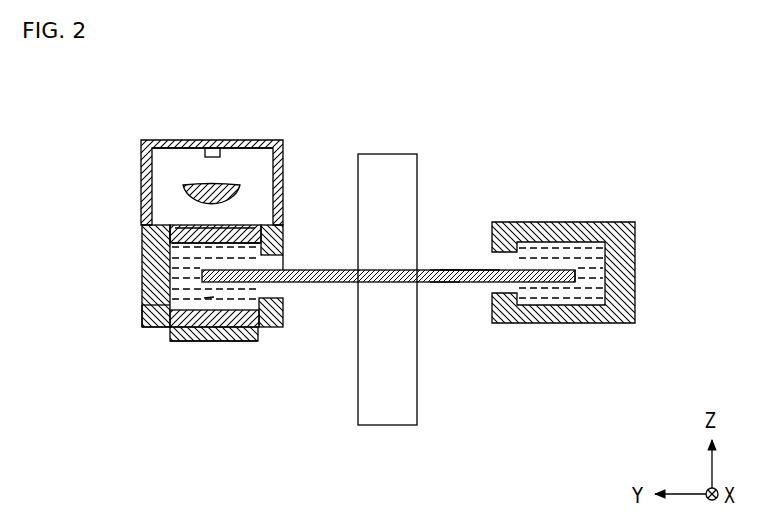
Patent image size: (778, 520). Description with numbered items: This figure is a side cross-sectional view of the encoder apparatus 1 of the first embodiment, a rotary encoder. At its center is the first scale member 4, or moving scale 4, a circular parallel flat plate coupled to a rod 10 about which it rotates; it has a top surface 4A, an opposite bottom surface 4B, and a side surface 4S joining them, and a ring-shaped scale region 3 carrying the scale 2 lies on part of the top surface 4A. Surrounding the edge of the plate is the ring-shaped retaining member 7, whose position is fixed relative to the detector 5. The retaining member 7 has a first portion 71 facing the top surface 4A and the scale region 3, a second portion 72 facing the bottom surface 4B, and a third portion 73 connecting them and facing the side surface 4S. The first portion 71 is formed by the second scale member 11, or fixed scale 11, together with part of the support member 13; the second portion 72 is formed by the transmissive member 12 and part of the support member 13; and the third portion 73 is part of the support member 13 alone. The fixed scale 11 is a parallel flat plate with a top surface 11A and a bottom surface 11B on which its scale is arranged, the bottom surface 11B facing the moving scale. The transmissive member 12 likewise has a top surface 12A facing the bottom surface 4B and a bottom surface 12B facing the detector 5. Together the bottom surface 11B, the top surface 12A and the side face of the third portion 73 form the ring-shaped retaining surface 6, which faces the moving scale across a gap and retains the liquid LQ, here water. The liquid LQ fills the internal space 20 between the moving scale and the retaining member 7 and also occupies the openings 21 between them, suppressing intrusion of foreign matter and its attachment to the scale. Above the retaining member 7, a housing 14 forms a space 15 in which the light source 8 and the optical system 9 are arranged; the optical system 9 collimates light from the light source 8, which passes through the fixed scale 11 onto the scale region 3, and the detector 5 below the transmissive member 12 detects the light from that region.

The encoder apparatus 1 is at (634, 142).
The scale 2 is at (238, 288).
The scale region 3 is at (262, 283).
The first scale member 4 is at (464, 263).
The top surface 4A is at (444, 269).
The bottom surface 4B is at (444, 284).
The side surface 4S is at (575, 278).
The detector 5 is at (171, 337).
The retaining surface 6 is at (228, 247).
The retaining member 7 is at (45, 225).
The light source 8 is at (221, 152).
The optical system 9 is at (242, 185).
The rod 10 is at (418, 165).
The second scale member 11 is at (142, 233).
The top surface 11A is at (182, 237).
The bottom surface 11B is at (200, 248).
The transmissive member 12 is at (142, 305).
The top surface 12A is at (284, 327).
The bottom surface 12B is at (233, 341).
The support member 13 is at (142, 272).
The housing 14 is at (162, 139).
The space 15 is at (192, 152).
The internal space 20 is at (209, 300).
The openings 21 is at (285, 260).
The first portion 71 is at (188, 235).
The second portion 72 is at (197, 341).
The third portion 73 is at (152, 328).
The liquid LQ is at (228, 302).